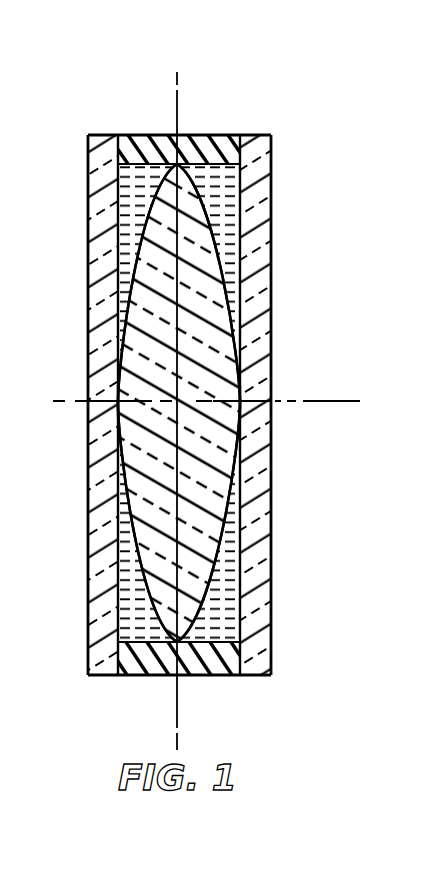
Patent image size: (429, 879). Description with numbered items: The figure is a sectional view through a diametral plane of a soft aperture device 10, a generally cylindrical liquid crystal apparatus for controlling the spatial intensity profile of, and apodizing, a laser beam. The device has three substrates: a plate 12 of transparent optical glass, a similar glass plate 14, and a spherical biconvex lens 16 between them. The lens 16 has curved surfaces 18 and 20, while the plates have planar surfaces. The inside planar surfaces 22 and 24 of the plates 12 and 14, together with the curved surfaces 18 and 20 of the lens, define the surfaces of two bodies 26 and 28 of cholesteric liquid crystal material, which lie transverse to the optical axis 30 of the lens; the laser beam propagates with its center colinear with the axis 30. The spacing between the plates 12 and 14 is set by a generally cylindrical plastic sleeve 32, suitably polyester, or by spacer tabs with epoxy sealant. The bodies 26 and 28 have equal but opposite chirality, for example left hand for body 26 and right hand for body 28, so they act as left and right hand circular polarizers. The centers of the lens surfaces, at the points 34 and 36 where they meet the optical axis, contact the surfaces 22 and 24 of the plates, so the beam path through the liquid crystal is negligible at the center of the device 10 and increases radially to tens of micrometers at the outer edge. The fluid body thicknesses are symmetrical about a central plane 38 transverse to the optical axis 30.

The soft aperture device 10 is at (210, 401).
The plate 12 is at (90, 300).
The glass plate 14 is at (271, 289).
The spherical biconvex lens 16 is at (220, 472).
The curved surface 18 is at (120, 457).
The curved surface 20 is at (223, 528).
The inside planar surface 22 is at (120, 575).
The inside planar surface 24 is at (242, 597).
The body of cholesteric liquid crystal material 26 is at (118, 213).
The body of cholesteric liquid crystal material 28 is at (230, 217).
The optical axis 30 is at (330, 400).
The plastic sleeve 32 is at (128, 135).
The contact point 34 is at (118, 387).
The contact point 36 is at (240, 387).
The central plane 38 is at (177, 108).